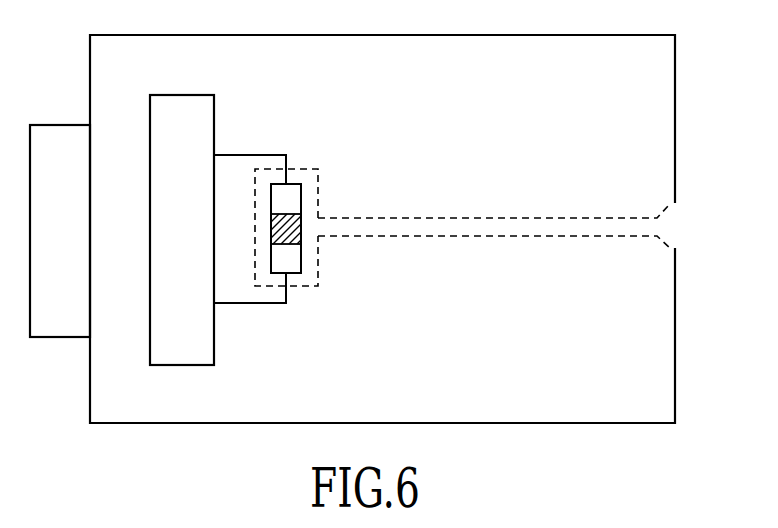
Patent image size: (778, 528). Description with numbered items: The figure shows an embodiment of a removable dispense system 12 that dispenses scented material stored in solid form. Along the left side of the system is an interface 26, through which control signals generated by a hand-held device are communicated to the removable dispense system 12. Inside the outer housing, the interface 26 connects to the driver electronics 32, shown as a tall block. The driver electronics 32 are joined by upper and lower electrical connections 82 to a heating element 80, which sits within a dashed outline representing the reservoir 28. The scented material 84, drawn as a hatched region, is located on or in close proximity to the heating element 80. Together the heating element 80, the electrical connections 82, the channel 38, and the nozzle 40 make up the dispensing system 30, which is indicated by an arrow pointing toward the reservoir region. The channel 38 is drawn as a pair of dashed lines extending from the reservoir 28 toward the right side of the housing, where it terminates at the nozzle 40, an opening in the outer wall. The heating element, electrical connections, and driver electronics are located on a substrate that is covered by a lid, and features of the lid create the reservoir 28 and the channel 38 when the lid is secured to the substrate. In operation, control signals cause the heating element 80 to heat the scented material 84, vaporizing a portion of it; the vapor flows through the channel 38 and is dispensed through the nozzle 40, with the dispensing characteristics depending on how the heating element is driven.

The removable dispense system 12 is at (572, 424).
The interface 26 is at (52, 120).
The driver electronics 32 is at (163, 95).
The electrical connections 82 is at (230, 155).
The dispensing system 30 is at (286, 92).
The reservoir 28 is at (305, 168).
The channel 38 is at (483, 216).
The nozzle 40 is at (667, 208).
The heating element 80 is at (302, 200).
The scented material 84 is at (286, 246).